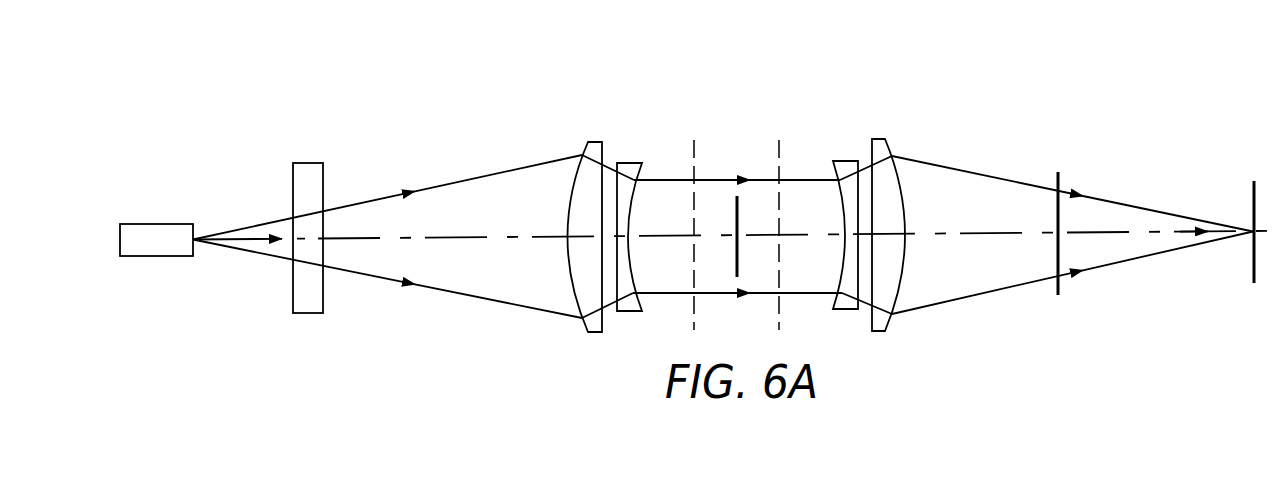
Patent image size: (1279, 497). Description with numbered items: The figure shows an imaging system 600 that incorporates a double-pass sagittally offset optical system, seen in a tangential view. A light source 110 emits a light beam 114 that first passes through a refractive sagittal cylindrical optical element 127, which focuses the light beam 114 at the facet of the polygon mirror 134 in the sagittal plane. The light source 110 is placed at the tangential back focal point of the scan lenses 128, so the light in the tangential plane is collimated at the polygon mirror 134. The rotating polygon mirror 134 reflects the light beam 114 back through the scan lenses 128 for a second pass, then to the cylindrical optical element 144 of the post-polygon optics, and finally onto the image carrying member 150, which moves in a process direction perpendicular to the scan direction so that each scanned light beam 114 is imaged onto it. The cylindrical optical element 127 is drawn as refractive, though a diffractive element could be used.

The imaging system 600 is at (1112, 63).
The light source 110 is at (130, 224).
The light beam 114 is at (245, 253).
The refractive sagittal cylindrical optical element 127 is at (308, 163).
The scan lenses 128 is at (646, 132).
The polygon mirror 134 is at (734, 200).
The cylindrical optical element 144 is at (1061, 184).
The image carrying member 150 is at (1253, 272).